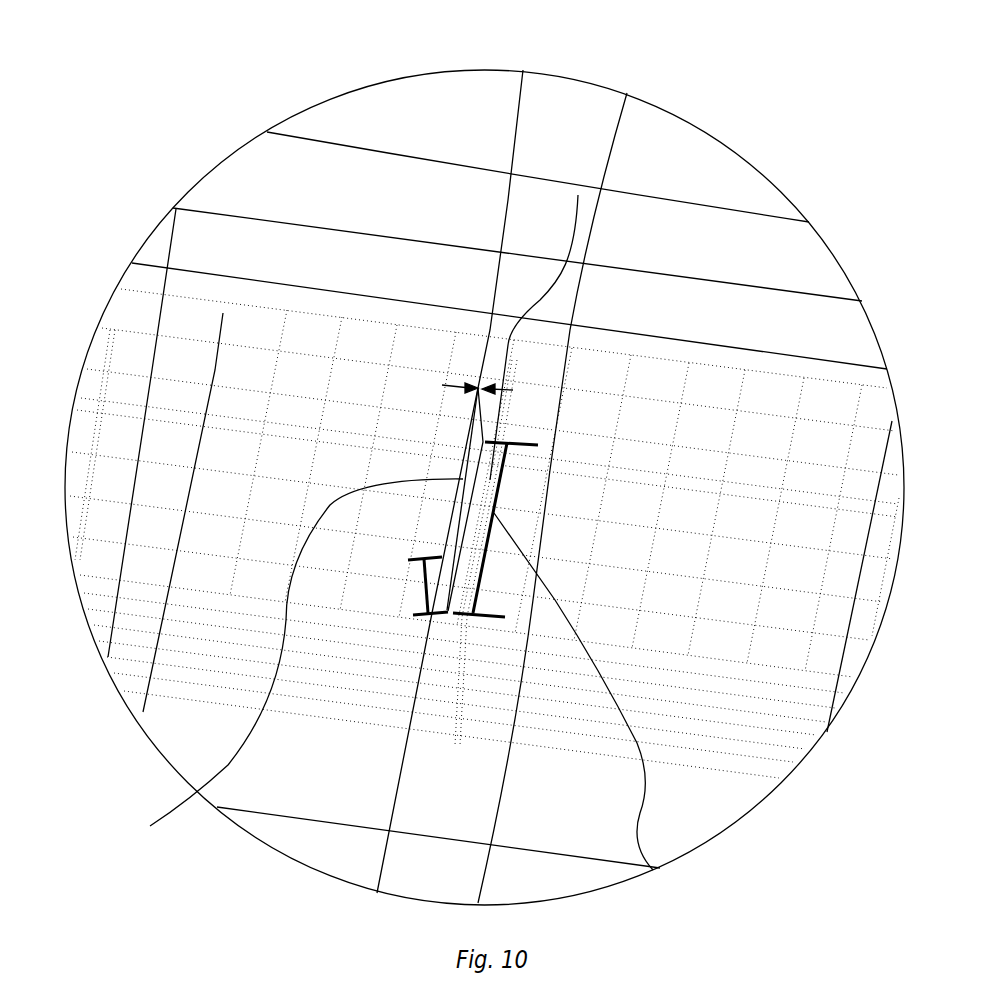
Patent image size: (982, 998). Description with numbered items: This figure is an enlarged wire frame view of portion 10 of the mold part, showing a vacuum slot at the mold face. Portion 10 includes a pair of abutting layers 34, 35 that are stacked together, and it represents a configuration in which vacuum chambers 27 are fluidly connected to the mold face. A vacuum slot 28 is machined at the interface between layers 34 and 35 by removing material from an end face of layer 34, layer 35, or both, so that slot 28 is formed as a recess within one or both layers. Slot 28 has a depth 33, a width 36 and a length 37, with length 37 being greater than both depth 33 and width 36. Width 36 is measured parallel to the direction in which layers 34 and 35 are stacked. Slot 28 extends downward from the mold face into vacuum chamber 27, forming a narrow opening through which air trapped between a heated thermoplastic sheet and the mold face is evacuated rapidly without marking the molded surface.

The portion 10 is at (745, 160).
The vacuum chamber 27 is at (275, 452).
The vacuum slot 28 is at (150, 826).
The depth 33 is at (424, 583).
The layer 34 is at (397, 103).
The layer 35 is at (692, 148).
The width 36 is at (578, 195).
The length 37 is at (653, 870).